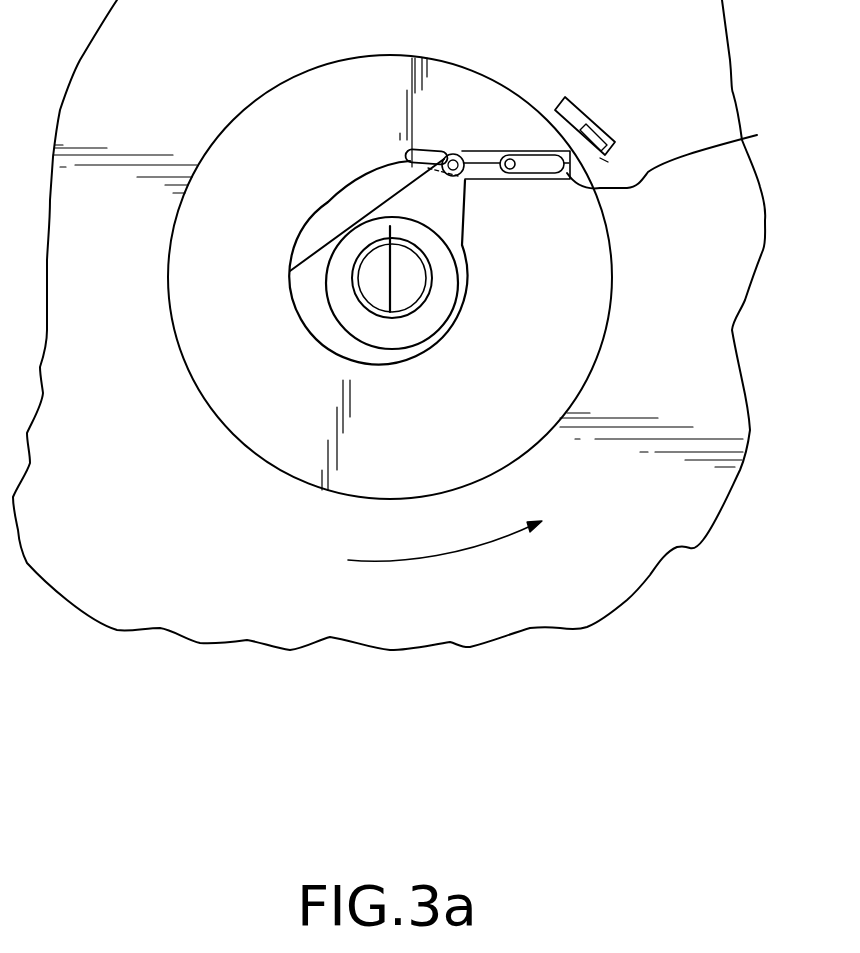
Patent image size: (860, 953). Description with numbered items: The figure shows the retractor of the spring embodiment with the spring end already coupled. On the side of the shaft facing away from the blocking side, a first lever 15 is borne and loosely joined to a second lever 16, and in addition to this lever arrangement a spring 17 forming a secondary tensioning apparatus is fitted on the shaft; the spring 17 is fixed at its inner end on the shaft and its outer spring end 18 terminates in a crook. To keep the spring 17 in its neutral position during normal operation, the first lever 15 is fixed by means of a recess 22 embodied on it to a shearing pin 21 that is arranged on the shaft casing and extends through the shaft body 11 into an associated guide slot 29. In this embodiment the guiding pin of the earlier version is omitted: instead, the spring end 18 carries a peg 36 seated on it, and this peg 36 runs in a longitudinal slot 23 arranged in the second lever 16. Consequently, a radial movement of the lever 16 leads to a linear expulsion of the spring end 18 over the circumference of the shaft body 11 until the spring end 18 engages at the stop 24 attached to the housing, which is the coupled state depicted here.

The shaft body 11 is at (562, 337).
The first lever 15 is at (450, 207).
The second lever 16 is at (757, 135).
The spring 17 is at (437, 380).
The spring end 18 is at (600, 158).
The shearing pin 21 is at (507, 98).
The recess 22 is at (453, 155).
The longitudinal slot 23 is at (545, 157).
The stop 24 is at (570, 112).
The guide slot 29 is at (420, 152).
The peg 36 is at (512, 156).